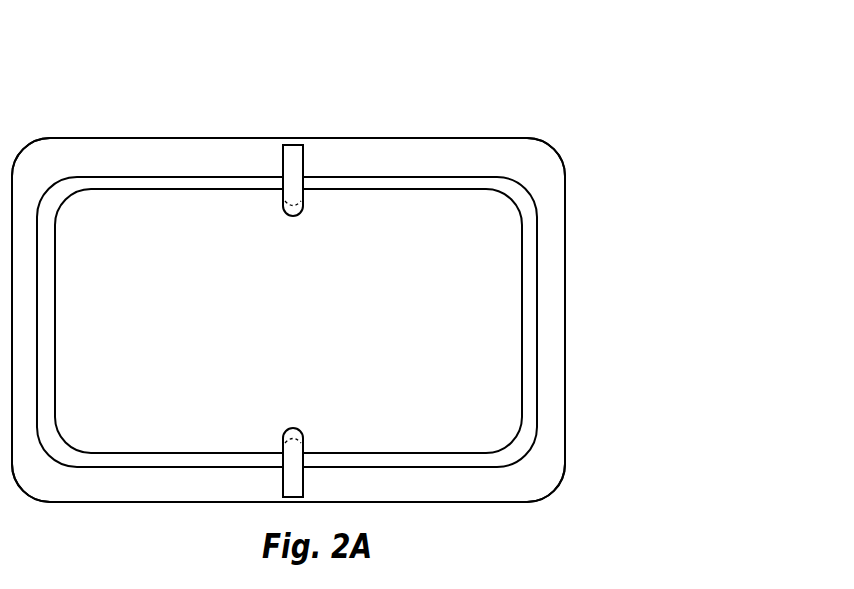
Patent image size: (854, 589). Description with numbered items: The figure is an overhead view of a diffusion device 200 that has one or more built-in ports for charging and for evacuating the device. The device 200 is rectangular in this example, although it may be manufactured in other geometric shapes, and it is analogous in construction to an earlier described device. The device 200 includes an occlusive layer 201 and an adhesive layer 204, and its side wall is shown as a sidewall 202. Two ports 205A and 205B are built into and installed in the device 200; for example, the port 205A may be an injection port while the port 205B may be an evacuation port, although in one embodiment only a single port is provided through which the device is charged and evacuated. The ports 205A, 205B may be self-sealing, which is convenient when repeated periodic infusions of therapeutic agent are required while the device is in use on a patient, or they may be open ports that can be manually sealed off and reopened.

The diffusion device 200 is at (382, 113).
The occlusive layer 201 is at (458, 311).
The sidewall 202 is at (227, 180).
The adhesive layer 204 is at (157, 478).
The port 205A is at (285, 195).
The port 205B is at (302, 480).